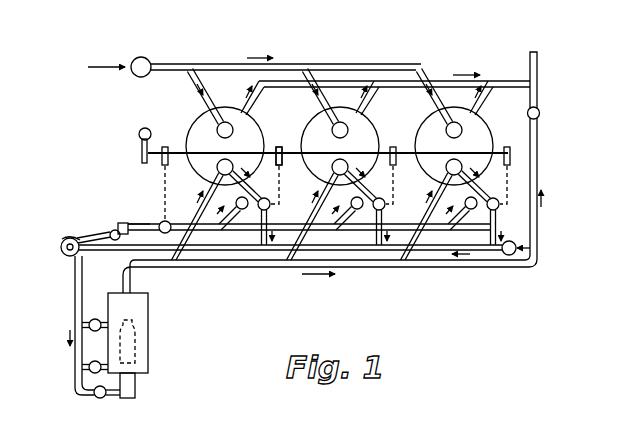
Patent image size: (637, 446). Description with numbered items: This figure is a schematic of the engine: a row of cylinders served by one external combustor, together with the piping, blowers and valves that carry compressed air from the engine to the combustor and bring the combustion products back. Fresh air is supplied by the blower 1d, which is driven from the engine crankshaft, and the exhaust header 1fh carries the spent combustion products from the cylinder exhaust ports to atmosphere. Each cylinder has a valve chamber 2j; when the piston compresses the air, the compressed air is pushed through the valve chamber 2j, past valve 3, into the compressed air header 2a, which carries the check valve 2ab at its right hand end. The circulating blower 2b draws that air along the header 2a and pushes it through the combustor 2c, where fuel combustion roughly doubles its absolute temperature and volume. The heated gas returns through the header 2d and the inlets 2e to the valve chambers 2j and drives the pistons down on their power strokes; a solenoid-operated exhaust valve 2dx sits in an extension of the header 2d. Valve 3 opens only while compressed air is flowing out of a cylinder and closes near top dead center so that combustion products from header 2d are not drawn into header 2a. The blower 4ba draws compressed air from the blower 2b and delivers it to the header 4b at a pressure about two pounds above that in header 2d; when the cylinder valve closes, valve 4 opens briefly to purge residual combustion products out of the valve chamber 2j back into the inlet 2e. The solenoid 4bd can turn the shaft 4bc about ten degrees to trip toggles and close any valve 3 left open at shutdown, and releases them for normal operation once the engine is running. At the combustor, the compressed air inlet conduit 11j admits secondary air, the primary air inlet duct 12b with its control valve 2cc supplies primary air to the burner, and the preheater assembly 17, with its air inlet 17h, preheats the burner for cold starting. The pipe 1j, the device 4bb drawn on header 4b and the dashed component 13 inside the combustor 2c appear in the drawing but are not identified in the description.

The blower 1d is at (141, 58).
The intake pipe 1j is at (229, 48).
The exhaust header 1fh is at (443, 80).
The exhaust valve 2dx is at (539, 115).
The header 2d is at (255, 268).
The header 2a is at (357, 253).
The check valve 2ab is at (512, 256).
The inlets 2e is at (186, 232).
The valve chamber 2j is at (217, 167).
The valve 3 is at (265, 198).
The valve 4 is at (236, 203).
The solenoid 4bd is at (144, 127).
The shaft 4bc is at (283, 148).
The valve 4bb is at (167, 219).
The blower 4ba is at (111, 229).
The header 4b is at (128, 222).
The circulating blower 2b is at (63, 240).
The compressed air inlet conduit 11j is at (89, 320).
The primary air inlet duct 12b is at (88, 364).
The control valve 2cc is at (90, 391).
The air inlet 17h is at (114, 399).
The combustor 2c is at (148, 312).
The container 13 is at (140, 352).
The preheater assembly 17 is at (136, 388).